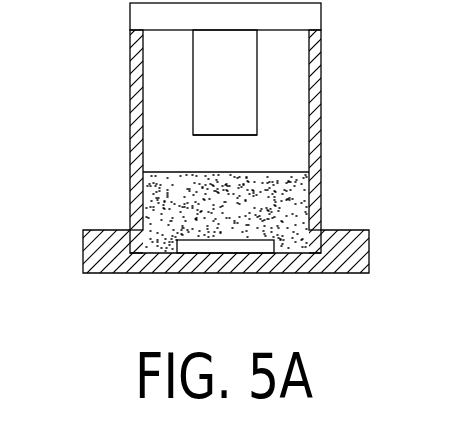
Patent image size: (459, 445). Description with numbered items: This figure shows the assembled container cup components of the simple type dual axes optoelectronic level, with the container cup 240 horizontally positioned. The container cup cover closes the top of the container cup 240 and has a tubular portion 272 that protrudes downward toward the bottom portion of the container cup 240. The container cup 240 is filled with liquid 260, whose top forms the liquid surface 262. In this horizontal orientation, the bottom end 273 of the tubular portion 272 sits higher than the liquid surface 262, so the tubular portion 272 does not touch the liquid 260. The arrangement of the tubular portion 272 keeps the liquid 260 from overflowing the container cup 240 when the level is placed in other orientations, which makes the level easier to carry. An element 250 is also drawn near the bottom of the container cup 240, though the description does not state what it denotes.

The container cup 240 is at (137, 56).
The heating element 250 is at (228, 243).
The liquid 260 is at (290, 197).
The liquid surface 262 is at (288, 168).
The tubular portion 272 is at (193, 83).
The bottom end 273 is at (205, 140).